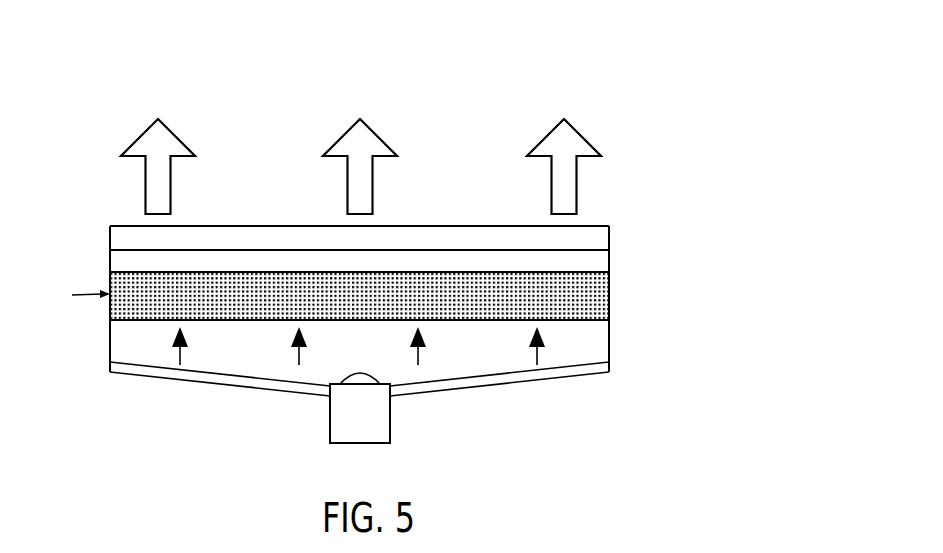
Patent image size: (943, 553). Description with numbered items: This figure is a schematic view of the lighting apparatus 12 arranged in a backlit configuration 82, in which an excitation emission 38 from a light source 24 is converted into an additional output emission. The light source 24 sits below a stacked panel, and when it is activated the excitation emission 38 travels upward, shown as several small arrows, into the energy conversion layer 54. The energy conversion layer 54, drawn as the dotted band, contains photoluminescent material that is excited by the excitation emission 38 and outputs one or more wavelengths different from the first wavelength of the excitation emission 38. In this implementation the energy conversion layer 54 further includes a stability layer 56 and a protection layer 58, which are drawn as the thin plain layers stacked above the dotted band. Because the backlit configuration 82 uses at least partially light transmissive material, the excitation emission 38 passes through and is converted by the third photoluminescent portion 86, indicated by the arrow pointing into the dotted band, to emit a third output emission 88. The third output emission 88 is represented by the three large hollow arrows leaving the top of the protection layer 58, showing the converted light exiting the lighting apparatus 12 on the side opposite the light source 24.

The lighting apparatus 12 is at (416, 211).
The backlit configuration 82 is at (359, 311).
The light source 24 is at (374, 425).
The excitation emission 38 is at (297, 356).
The energy conversion layer 54 is at (604, 293).
The stability layer 56 is at (604, 262).
The protection layer 58 is at (604, 237).
The third photoluminescent portion 86 is at (76, 295).
The third output emission 88 is at (161, 188).